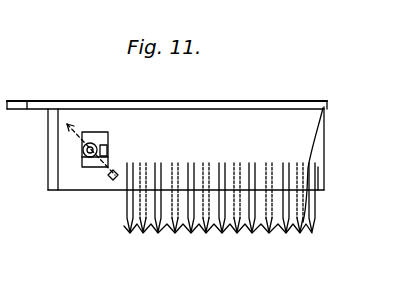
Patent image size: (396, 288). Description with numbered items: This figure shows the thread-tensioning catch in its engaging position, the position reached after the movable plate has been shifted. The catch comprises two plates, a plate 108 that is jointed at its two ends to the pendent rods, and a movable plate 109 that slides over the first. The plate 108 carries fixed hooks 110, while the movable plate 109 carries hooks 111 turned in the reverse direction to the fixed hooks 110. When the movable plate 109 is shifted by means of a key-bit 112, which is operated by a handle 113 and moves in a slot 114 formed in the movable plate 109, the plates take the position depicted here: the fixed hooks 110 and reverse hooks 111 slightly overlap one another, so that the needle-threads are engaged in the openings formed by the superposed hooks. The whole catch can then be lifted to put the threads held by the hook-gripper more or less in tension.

The plate 108 is at (48, 159).
The movable plate 109 is at (184, 138).
The fixed hooks 110 is at (311, 220).
The hooks 111 is at (129, 224).
The key-bit 112 is at (106, 150).
The handle 113 is at (69, 121).
The slot 114 is at (97, 138).